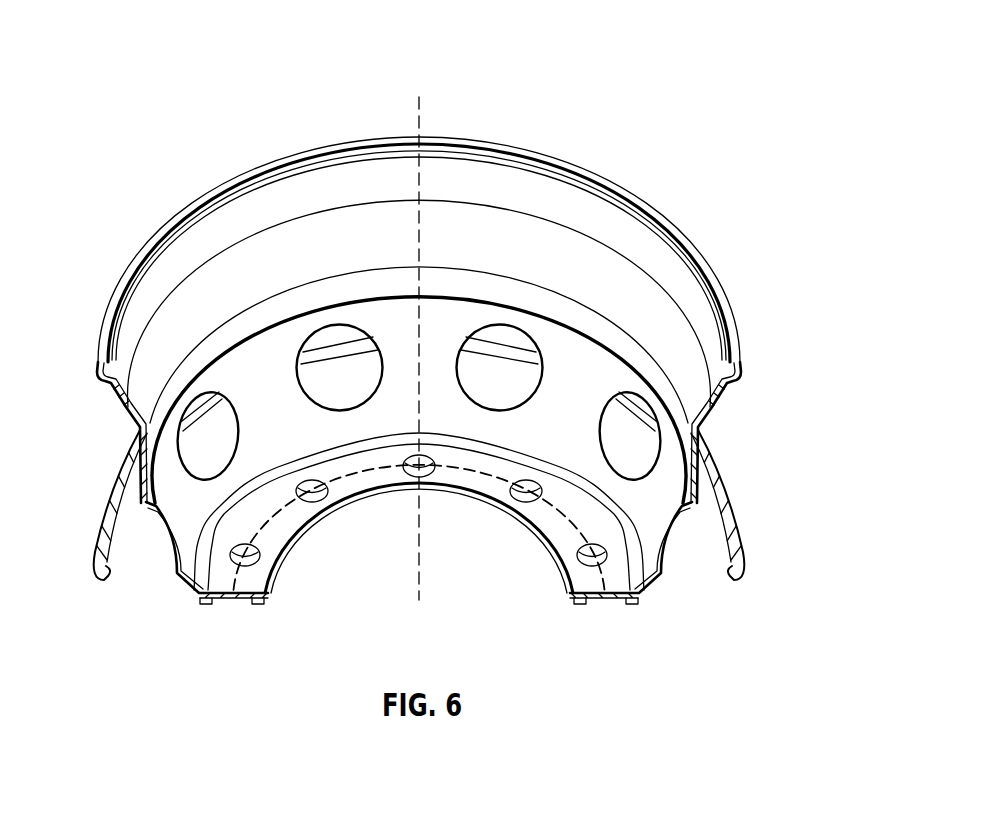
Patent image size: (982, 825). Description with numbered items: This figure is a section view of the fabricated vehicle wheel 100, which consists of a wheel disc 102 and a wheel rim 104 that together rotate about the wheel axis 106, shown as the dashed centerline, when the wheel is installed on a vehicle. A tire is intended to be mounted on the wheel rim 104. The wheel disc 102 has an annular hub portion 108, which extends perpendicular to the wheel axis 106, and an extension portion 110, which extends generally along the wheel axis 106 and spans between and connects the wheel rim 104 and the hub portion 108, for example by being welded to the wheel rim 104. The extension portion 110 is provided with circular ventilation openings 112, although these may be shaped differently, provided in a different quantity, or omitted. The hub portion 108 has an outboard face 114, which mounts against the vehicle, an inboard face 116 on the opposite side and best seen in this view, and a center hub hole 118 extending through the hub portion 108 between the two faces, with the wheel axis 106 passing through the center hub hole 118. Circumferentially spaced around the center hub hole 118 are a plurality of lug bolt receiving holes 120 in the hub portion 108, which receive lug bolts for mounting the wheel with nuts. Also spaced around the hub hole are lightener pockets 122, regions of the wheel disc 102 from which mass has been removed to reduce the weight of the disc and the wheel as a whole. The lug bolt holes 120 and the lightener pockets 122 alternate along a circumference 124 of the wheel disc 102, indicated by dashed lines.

The fabricated vehicle wheel 100 is at (718, 119).
The wheel disc 102 is at (177, 598).
The wheel rim 104 is at (728, 293).
The wheel axis 106 is at (420, 100).
The hub portion 108 is at (570, 529).
The extension portion 110 is at (652, 588).
The ventilation openings 112 is at (210, 440).
The outboard face 114 is at (578, 603).
The inboard face 116 is at (270, 533).
The center hub hole 118 is at (387, 543).
The lug bolt receiving holes 120 is at (309, 484).
The lightener pockets 122 is at (600, 600).
The circumference 124 is at (238, 573).